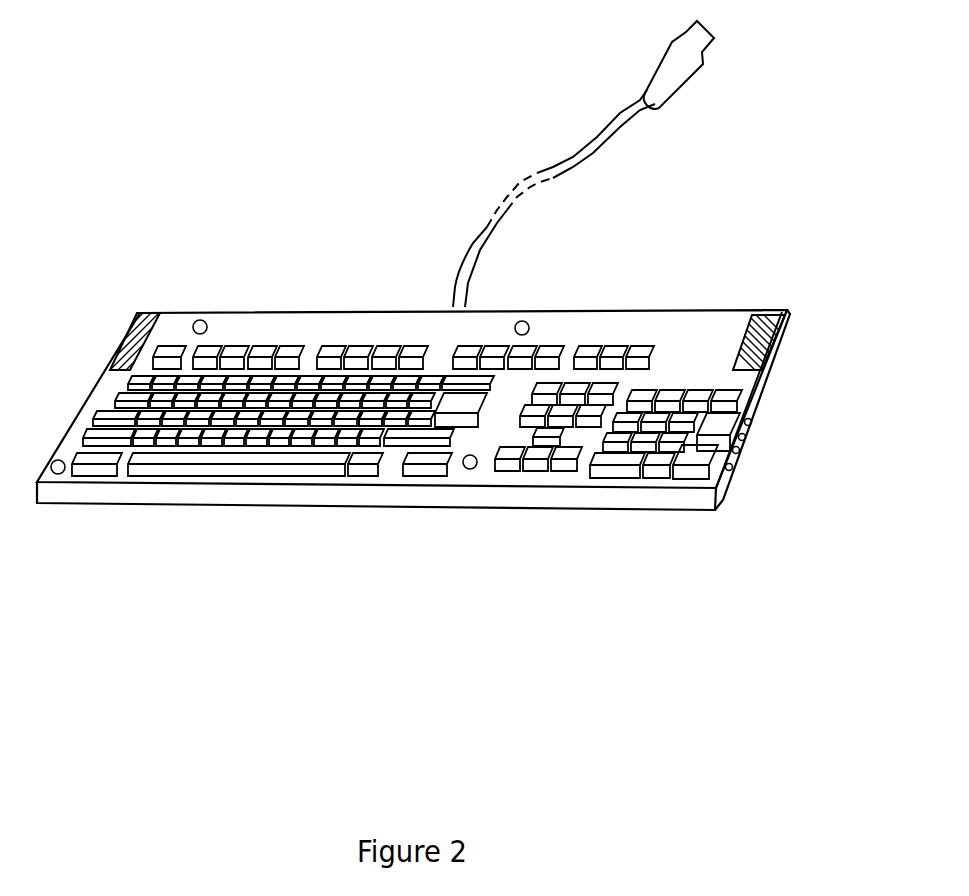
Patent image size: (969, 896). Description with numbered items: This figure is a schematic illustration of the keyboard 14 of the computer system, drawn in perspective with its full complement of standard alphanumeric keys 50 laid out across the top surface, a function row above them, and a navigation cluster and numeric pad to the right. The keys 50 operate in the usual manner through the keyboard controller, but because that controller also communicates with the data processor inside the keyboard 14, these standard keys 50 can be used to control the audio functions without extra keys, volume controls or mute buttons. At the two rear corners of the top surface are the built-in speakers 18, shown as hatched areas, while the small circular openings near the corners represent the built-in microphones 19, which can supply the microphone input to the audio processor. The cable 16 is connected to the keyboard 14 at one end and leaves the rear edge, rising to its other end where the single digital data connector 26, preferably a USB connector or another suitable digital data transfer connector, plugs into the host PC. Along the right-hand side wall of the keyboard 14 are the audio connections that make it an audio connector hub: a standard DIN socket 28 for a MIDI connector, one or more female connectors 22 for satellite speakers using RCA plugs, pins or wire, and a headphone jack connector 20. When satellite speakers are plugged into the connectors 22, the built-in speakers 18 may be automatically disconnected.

The keyboard 14 is at (465, 487).
The cable 16 is at (473, 252).
The built-in speakers 18 is at (137, 323).
The built-in microphones 19 is at (205, 321).
The headphone jack connector 20 is at (733, 468).
The female connectors 22 is at (748, 451).
The digital data connector 26 is at (673, 85).
The DIN socket 28 is at (765, 417).
The alphanumeric keys 50 is at (363, 413).